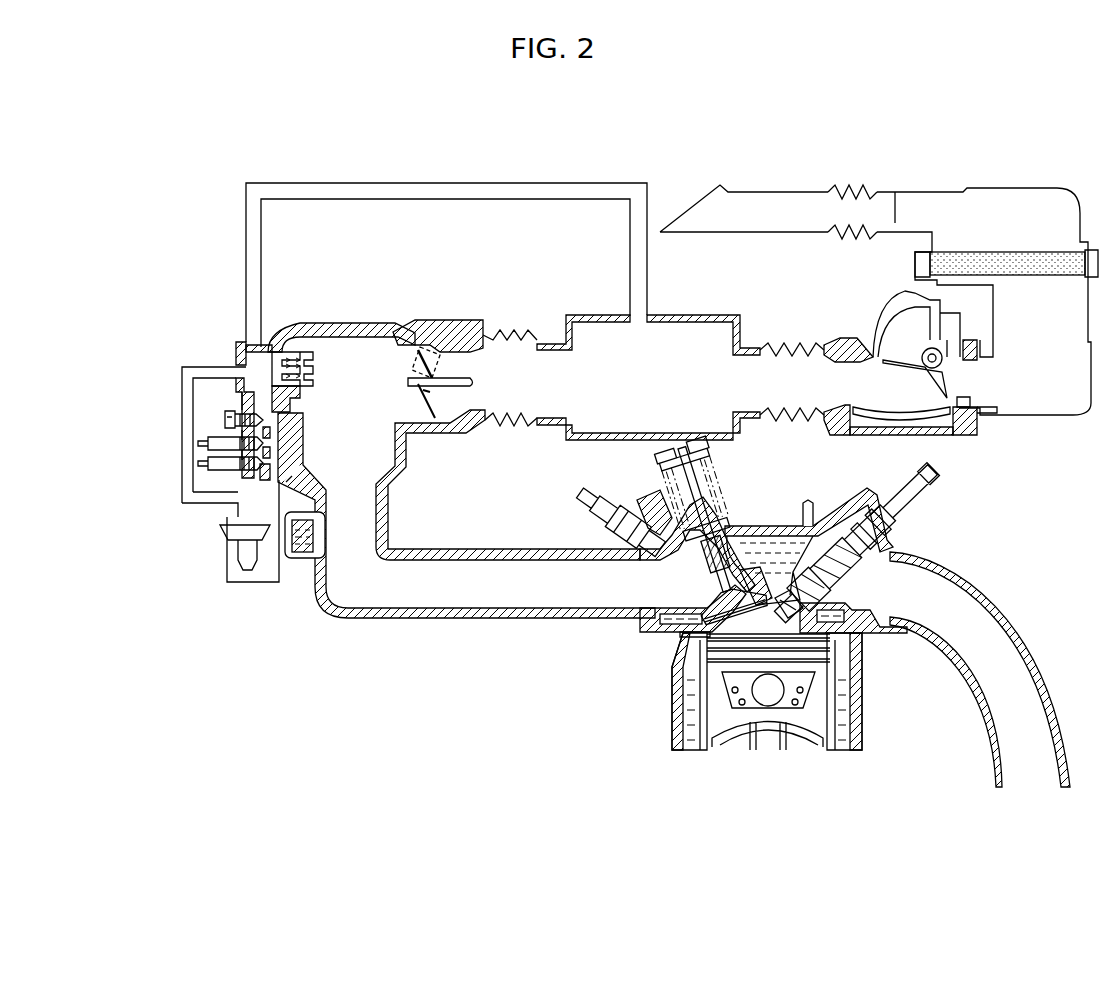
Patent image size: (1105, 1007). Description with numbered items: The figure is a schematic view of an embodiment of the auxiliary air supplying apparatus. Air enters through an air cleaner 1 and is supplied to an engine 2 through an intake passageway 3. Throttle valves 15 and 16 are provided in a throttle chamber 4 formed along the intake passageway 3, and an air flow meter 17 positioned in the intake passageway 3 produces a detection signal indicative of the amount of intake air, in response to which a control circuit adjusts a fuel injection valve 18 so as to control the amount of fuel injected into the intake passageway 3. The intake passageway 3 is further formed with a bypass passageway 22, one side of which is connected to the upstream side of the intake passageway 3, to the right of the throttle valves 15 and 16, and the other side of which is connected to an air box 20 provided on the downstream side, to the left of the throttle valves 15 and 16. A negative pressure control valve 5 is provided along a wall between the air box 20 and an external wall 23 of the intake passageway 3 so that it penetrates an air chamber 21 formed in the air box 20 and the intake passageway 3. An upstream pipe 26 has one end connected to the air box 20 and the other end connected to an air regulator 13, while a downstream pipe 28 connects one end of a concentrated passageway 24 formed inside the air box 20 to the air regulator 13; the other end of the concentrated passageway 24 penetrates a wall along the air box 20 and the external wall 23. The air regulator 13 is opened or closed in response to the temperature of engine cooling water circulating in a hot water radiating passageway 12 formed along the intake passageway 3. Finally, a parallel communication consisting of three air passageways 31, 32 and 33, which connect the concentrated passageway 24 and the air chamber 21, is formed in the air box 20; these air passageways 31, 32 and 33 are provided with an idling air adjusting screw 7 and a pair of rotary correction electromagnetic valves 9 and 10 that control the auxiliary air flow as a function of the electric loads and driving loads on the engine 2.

The air cleaner 1 is at (1020, 198).
The engine 2 is at (821, 610).
The intake passageway 3 is at (600, 437).
The throttle chamber 4 is at (437, 342).
The negative pressure control valve 5 is at (315, 360).
The idling air adjusting screw 7 is at (233, 420).
The rotary correction electromagnetic valve 9 is at (212, 445).
The rotary correction electromagnetic valve 10 is at (228, 465).
The hot water radiating passageway 12 is at (305, 558).
The air regulator 13 is at (225, 532).
The throttle valve 15 is at (410, 362).
The throttle valve 16 is at (425, 400).
The air flow meter 17 is at (940, 426).
The fuel injection valve 18 is at (637, 540).
The air box 20 is at (228, 338).
The air chamber 21 is at (240, 356).
The bypass passageway 22 is at (450, 190).
The external wall 23 is at (305, 442).
The concentrated passageway 24 is at (293, 478).
The upstream pipe 26 is at (185, 423).
The downstream pipe 28 is at (255, 582).
The air passageway 31 is at (243, 470).
The air passageway 32 is at (189, 489).
The air passageway 33 is at (204, 499).